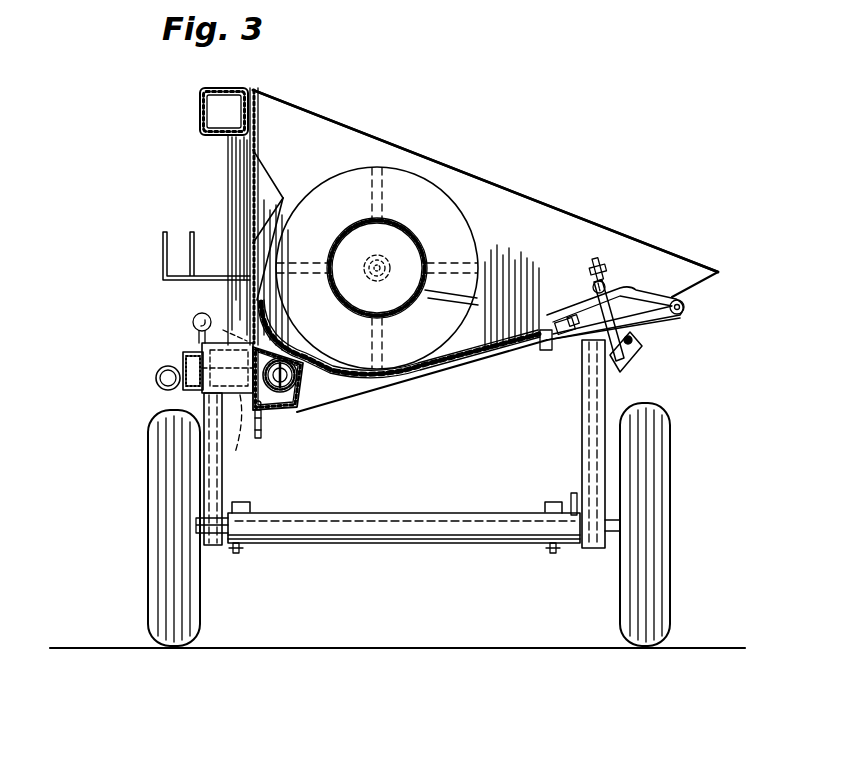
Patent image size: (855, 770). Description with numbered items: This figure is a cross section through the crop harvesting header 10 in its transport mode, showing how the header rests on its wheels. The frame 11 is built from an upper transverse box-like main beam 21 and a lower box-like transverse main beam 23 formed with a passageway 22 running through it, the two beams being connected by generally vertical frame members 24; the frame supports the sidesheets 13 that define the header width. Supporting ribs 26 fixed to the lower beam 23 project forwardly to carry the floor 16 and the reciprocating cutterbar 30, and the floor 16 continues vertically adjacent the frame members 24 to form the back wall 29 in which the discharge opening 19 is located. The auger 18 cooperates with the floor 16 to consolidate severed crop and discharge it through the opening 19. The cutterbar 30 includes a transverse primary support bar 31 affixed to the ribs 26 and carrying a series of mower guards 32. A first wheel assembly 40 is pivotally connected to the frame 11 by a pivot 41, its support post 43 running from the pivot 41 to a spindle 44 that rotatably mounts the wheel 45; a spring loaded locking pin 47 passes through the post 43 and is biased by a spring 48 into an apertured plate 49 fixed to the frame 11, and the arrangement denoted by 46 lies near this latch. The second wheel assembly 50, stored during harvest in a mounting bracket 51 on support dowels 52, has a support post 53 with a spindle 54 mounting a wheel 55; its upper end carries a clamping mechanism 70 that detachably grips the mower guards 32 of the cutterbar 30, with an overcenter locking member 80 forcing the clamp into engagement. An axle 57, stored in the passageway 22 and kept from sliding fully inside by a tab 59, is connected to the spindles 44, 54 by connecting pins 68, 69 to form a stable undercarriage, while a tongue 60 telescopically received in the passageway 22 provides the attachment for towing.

The crop harvesting header 10 is at (450, 118).
The frame 11 is at (200, 192).
The sidesheets 13 is at (548, 200).
The floor 16 is at (512, 332).
The auger 18 is at (470, 238).
The discharge opening 19 is at (283, 198).
The upper transverse main beam 21 is at (200, 108).
The passageway 22 is at (306, 368).
The lower transverse main beam 23 is at (294, 408).
The vertical frame members 24 is at (228, 165).
The supporting ribs 26 is at (405, 388).
The back wall 29 is at (260, 130).
The cutterbar 30 is at (570, 275).
The primary support bar 31 is at (545, 352).
The mower guards 32 is at (620, 312).
The first wheel assembly 40 is at (118, 437).
The pivot 41 is at (200, 350).
The support post 43 is at (222, 482).
The spindle 44 is at (194, 575).
The wheel 45 is at (200, 618).
The coupler assembly 46 is at (132, 352).
The locking pin 47 is at (156, 378).
The spring 48 is at (185, 388).
The apertured plate 49 is at (197, 312).
The second wheel assembly 50 is at (692, 394).
The mounting bracket 51 is at (163, 258).
The support dowels 52 is at (251, 433).
The support post 53 is at (590, 549).
The spindle 54 is at (612, 540).
The wheel 55 is at (670, 586).
The axle 57 is at (378, 545).
The tab 59 is at (571, 492).
The tongue 60 is at (283, 395).
The connecting pin 68 is at (248, 504).
The connecting pin 69 is at (548, 503).
The clamping mechanism 70 is at (692, 306).
The overcenter locking member 80 is at (640, 352).